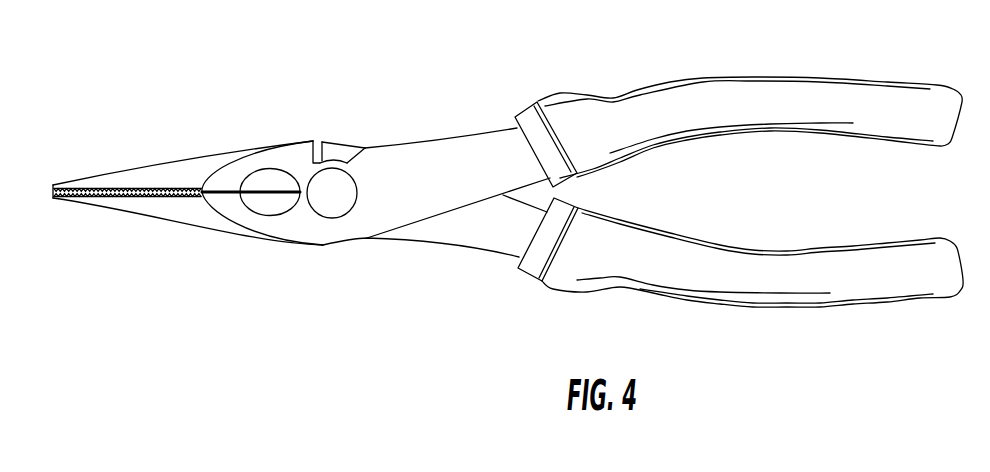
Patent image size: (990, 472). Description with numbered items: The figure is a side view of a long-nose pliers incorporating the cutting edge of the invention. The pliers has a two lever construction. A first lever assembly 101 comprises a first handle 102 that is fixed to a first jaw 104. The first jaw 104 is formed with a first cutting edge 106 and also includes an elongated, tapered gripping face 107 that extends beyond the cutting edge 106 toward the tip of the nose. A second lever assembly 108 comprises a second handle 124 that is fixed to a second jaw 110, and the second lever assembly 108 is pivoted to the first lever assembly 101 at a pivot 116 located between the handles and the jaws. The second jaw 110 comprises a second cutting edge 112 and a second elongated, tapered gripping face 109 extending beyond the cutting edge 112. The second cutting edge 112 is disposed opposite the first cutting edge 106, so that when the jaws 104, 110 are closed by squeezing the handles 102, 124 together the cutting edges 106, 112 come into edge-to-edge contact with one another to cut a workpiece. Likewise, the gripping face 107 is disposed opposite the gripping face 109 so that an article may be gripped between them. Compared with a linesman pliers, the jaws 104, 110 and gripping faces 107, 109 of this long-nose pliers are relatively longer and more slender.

The first lever assembly 101 is at (756, 231).
The first handle 102 is at (497, 240).
The first jaw 104 is at (177, 158).
The first cutting edge 106 is at (270, 192).
The gripping face 107 is at (128, 190).
The second lever assembly 108 is at (755, 63).
The second gripping face 109 is at (147, 198).
The second jaw 110 is at (207, 233).
The second cutting edge 112 is at (263, 193).
The pivot 116 is at (332, 205).
The second handle 124 is at (513, 143).